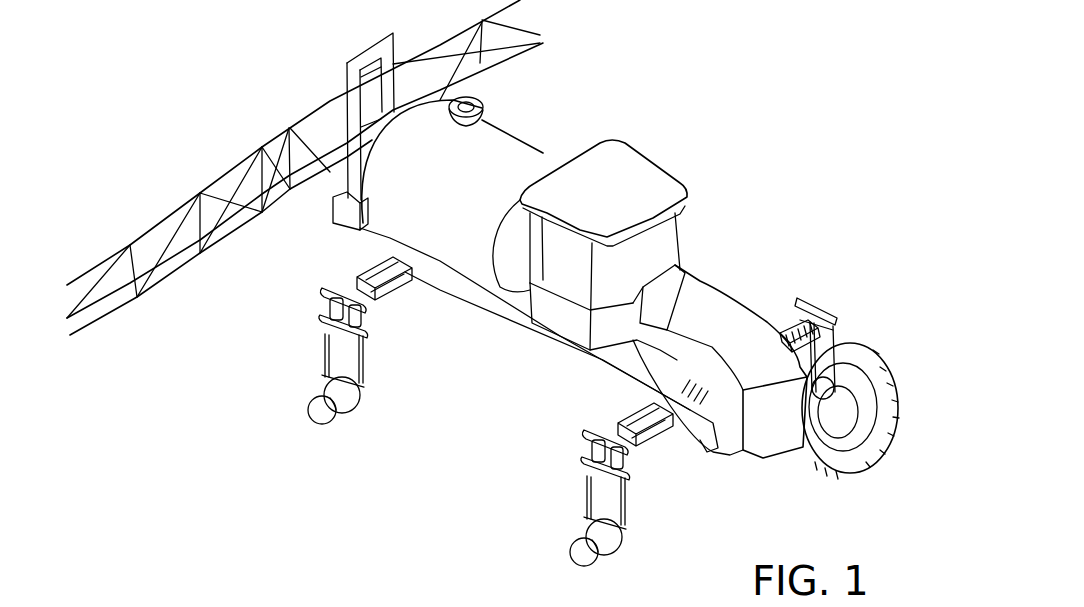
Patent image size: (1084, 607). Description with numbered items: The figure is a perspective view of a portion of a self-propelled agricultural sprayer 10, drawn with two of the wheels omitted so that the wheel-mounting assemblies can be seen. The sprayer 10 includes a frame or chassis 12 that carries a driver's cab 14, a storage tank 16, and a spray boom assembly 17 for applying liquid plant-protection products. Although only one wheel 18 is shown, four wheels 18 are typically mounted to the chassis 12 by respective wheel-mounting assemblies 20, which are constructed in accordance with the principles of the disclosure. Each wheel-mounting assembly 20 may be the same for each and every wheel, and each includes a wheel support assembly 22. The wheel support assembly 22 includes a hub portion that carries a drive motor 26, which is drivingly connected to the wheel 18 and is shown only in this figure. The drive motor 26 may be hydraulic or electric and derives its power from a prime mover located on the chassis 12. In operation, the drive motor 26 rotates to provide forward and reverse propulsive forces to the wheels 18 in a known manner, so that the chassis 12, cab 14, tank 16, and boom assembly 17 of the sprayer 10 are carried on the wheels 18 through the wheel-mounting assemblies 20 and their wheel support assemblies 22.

The self-propelled agricultural sprayer 10 is at (811, 89).
The chassis 12 is at (600, 362).
The driver's cab 14 is at (675, 180).
The storage tank 16 is at (542, 153).
The spray boom assembly 17 is at (272, 138).
The wheel 18 is at (887, 368).
The wheel-mounting assembly 20 is at (788, 295).
The wheel support assembly 22 is at (585, 477).
The drive motor 26 is at (337, 412).